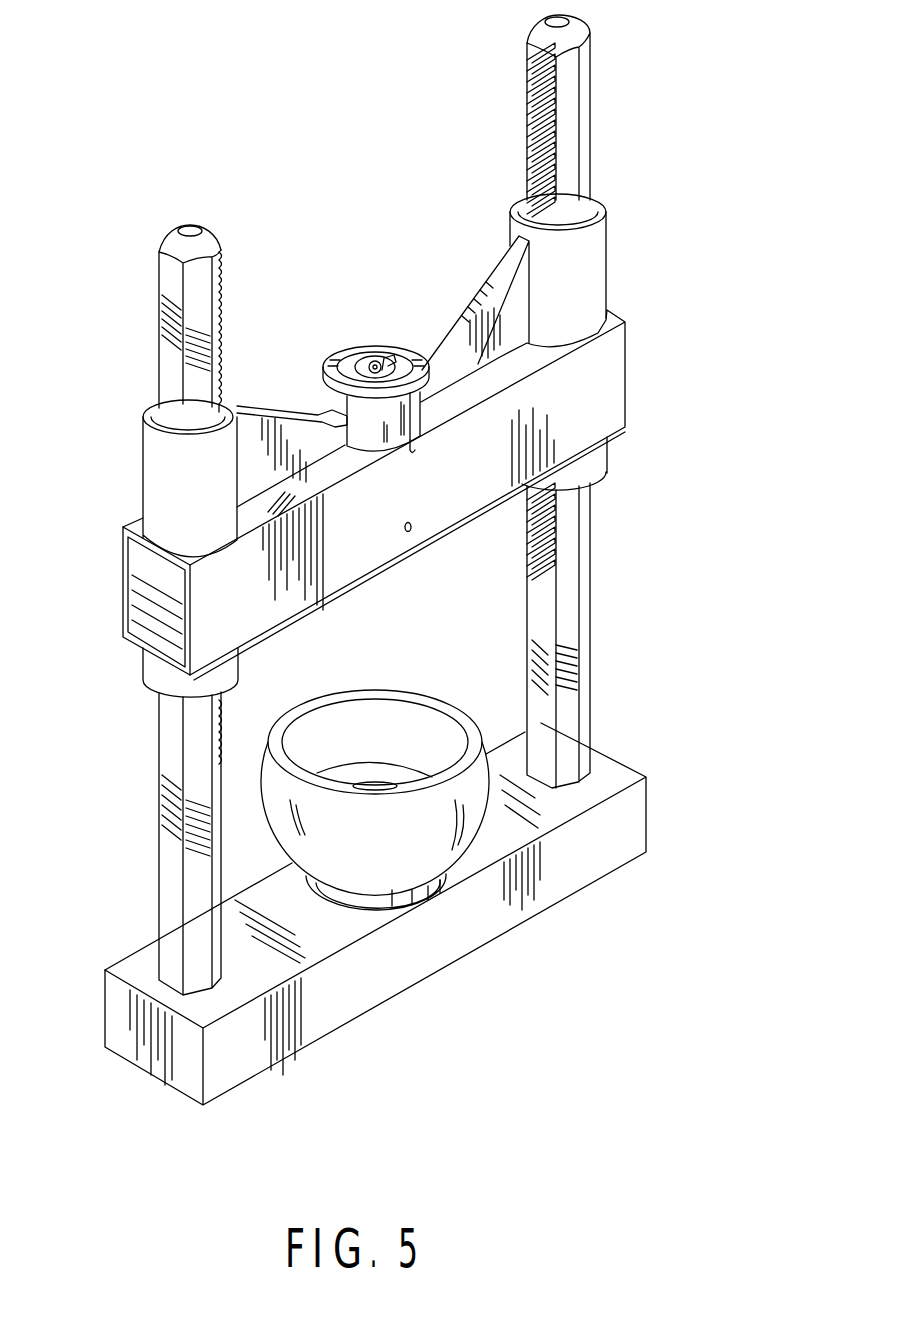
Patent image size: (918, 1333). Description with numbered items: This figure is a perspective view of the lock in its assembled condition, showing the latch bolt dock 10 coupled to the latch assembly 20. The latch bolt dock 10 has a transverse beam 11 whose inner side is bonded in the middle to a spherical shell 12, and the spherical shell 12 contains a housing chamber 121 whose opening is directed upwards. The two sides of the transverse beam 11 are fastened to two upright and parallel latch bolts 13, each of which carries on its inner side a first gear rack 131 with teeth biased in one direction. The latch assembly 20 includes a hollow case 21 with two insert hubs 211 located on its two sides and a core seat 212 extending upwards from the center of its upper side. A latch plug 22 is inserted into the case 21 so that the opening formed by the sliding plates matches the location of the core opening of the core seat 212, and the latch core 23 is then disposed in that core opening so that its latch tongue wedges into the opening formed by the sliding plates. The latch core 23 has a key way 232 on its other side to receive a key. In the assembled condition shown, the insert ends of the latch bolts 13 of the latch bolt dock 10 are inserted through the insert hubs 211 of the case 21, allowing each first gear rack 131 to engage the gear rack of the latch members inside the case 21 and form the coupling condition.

The latch bolt dock 10 is at (657, 797).
The transverse beam 11 is at (467, 940).
The spherical shell 12 is at (465, 772).
The housing chamber 121 is at (343, 708).
The latch bolt 13 is at (567, 672).
The first gear rack 131 is at (533, 530).
The latch assembly 20 is at (628, 291).
The case 21 is at (608, 386).
The insert hub 211 is at (593, 470).
The core seat 212 is at (336, 408).
The latch plug 22 is at (140, 598).
The latch core 23 is at (343, 362).
The key way 232 is at (383, 362).